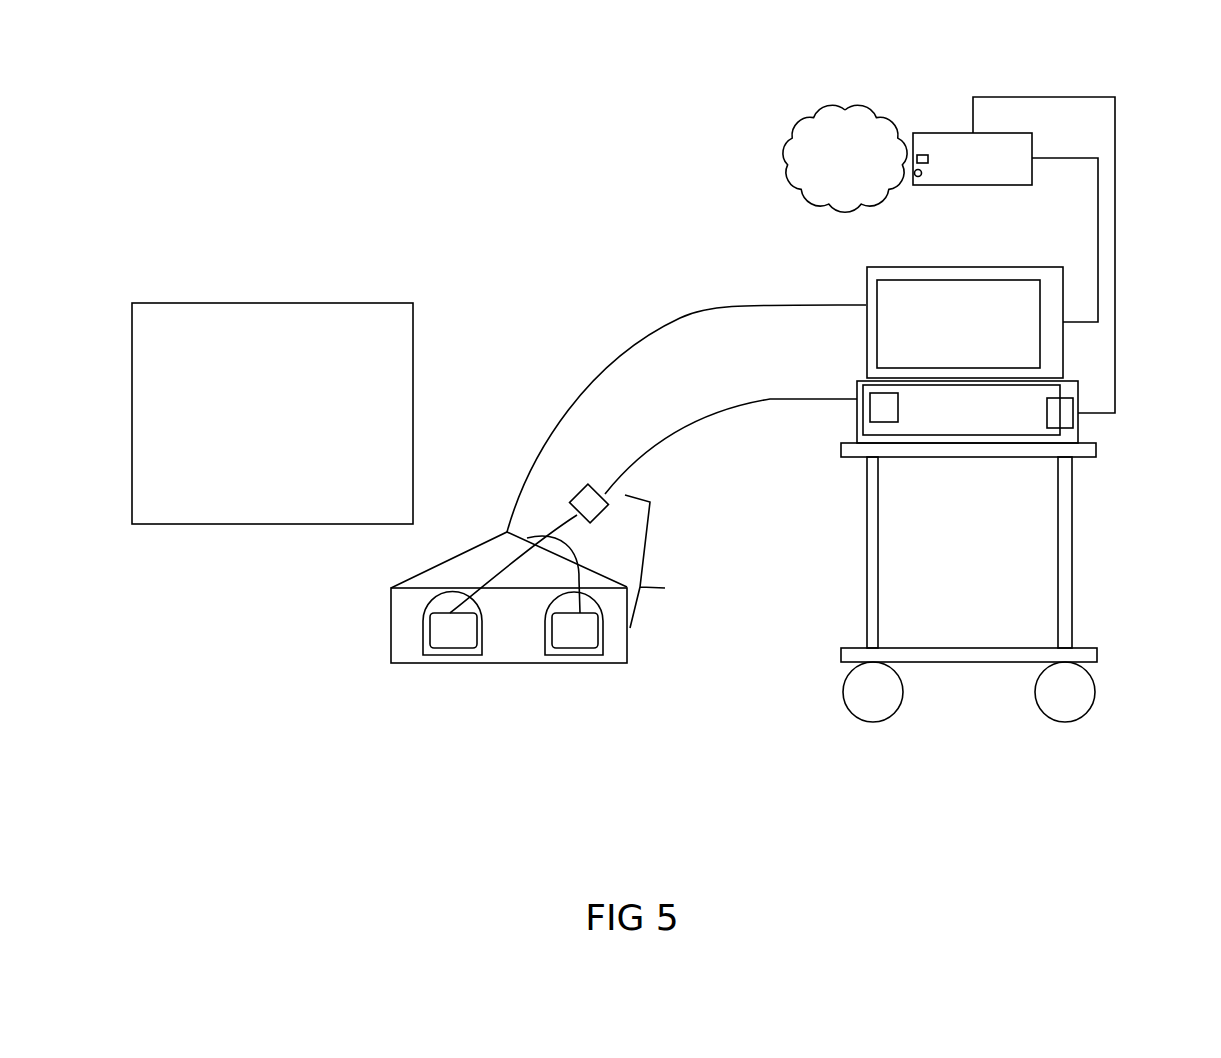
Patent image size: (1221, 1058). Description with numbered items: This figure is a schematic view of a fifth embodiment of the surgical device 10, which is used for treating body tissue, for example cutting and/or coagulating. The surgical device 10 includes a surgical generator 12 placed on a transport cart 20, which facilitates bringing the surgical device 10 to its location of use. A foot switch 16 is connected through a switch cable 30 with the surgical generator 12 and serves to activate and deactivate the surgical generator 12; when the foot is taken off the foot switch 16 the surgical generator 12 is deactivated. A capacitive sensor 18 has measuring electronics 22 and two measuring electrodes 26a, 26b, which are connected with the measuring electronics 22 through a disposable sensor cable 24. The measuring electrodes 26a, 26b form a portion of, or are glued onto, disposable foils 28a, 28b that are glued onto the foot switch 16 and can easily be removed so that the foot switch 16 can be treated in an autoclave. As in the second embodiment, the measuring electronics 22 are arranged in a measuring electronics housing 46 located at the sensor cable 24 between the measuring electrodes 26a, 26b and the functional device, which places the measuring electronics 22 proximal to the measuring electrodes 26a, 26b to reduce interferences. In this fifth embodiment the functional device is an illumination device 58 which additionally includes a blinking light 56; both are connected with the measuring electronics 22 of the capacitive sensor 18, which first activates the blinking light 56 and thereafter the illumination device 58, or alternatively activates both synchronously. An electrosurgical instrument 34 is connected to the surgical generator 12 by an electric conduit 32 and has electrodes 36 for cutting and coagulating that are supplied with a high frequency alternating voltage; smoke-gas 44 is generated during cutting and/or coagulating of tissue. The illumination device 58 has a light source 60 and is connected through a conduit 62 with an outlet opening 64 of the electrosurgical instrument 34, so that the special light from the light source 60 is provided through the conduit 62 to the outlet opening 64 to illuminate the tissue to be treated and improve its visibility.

The surgical device 10 is at (448, 325).
The surgical generator 12 is at (988, 288).
The foot switch 16 is at (413, 605).
The capacitive sensor 18 is at (669, 561).
The transport cart 20 is at (1062, 553).
The measuring electronics 22 is at (598, 502).
The sensor cable 24 is at (692, 427).
The measuring electrode 26a is at (457, 635).
The measuring electrode 26b is at (582, 635).
The foil 28a is at (433, 655).
The foil 28b is at (565, 657).
The switch cable 30 is at (787, 302).
The electric conduit 32 is at (1102, 250).
The electrosurgical instrument 34 is at (973, 163).
The electrodes 36 is at (923, 157).
The smoke-gas 44 is at (833, 133).
The measuring electronics housing 46 is at (578, 492).
The blinking light 56 is at (877, 405).
The illumination device 58 is at (1003, 427).
The light source 60 is at (1055, 414).
The conduit 62 is at (1115, 142).
The outlet opening 64 is at (920, 175).